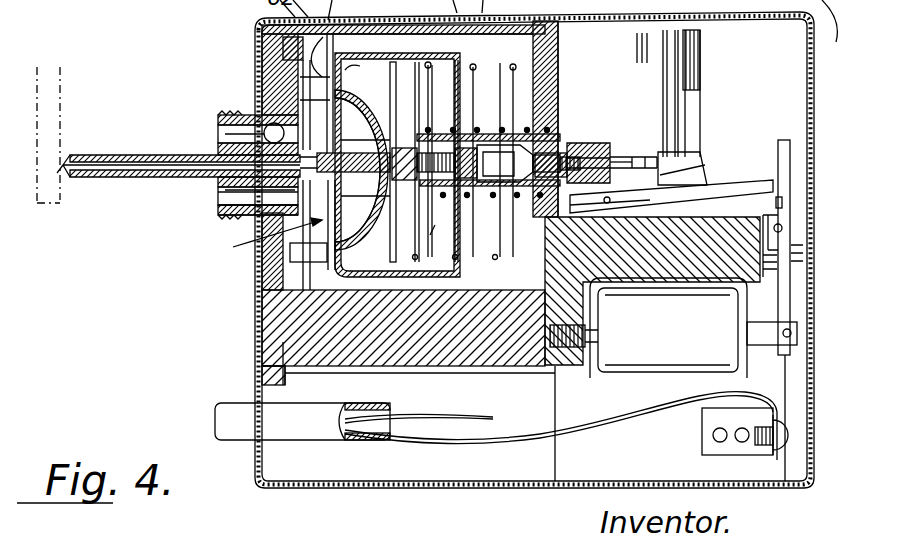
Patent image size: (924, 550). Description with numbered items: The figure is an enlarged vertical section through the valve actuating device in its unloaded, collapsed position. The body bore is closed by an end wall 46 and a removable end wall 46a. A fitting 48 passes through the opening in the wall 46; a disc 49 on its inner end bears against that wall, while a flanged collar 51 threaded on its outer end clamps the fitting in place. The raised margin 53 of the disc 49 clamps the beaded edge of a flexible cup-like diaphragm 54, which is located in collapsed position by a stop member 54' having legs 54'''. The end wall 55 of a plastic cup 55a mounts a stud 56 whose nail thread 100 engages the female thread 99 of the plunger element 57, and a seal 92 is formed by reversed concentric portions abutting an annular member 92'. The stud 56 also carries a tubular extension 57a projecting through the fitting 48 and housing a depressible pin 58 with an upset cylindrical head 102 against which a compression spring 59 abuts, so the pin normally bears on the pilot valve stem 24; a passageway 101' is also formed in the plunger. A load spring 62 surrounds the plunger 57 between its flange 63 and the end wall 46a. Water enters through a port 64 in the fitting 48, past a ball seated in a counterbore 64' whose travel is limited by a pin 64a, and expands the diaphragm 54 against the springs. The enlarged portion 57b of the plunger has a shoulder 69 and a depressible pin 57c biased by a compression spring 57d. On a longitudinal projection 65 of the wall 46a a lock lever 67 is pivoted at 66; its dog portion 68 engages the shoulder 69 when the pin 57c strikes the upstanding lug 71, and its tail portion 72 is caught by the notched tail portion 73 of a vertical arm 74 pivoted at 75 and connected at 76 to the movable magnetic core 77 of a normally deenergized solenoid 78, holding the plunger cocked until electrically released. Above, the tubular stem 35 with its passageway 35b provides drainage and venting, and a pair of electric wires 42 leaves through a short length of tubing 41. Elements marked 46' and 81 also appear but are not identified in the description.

The tubing 41 is at (290, 442).
The electric wires 42 is at (457, 415).
The end wall 46 is at (479, 203).
The housing wall 46' is at (331, 147).
The end wall 46a is at (558, 78).
The fitting 48 is at (213, 217).
The disc 49 is at (257, 113).
The raised margin 53 is at (258, 58).
The flexible cup-like diaphragm 54 is at (397, 165).
The stop member 54' is at (257, 239).
The legs 54''' is at (258, 261).
The end wall 55 is at (392, 115).
The plastic cup 55a is at (437, 238).
The stud 56 is at (398, 195).
The plunger element 57 is at (503, 130).
The tubular extension 57a is at (113, 155).
The enlarged portion 57b is at (593, 143).
The depressible pin 57c is at (647, 155).
The compression spring 57d is at (607, 147).
The depressible pin 58 is at (57, 173).
The compression spring 59 is at (361, 170).
The load spring 62 is at (490, 187).
The flange 63 is at (450, 130).
The port 64 is at (235, 165).
The counterbore 64' is at (221, 138).
The pin 64a is at (365, 73).
The longitudinal projection 65 is at (665, 262).
The pivot 66 is at (607, 205).
The lock lever 67 is at (710, 173).
The dog portion 68 is at (590, 143).
The shoulder 69 is at (562, 147).
The upstanding lug 71 is at (693, 160).
The tail portion 72 is at (735, 186).
The notched tail portion 73 is at (787, 203).
The vertical arm 74 is at (782, 140).
The pivot 75 is at (782, 228).
The connection 76 is at (791, 333).
The magnetic core 77 is at (764, 346).
The solenoid 78 is at (616, 374).
The contact leaves 81 is at (695, 150).
The seal 92 is at (231, 175).
The annular member 92' is at (366, 136).
The female thread 99 is at (470, 180).
The nail thread 100 is at (440, 187).
The passageway 101' is at (409, 151).
The upset cylindrical head 102 is at (217, 185).
The pilot valve stem 24 is at (62, 97).
The flanged collar 51 is at (114, 6).
The tubular stem 35 is at (177, 7).
The passageway 35b is at (241, 8).